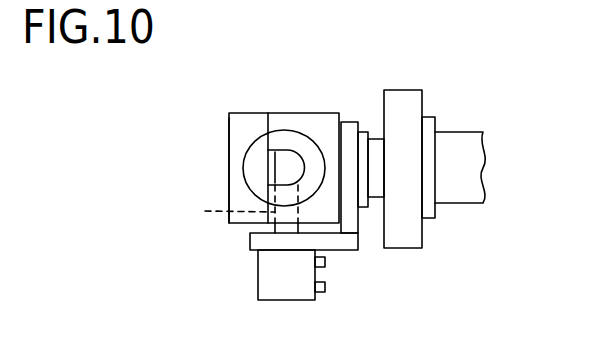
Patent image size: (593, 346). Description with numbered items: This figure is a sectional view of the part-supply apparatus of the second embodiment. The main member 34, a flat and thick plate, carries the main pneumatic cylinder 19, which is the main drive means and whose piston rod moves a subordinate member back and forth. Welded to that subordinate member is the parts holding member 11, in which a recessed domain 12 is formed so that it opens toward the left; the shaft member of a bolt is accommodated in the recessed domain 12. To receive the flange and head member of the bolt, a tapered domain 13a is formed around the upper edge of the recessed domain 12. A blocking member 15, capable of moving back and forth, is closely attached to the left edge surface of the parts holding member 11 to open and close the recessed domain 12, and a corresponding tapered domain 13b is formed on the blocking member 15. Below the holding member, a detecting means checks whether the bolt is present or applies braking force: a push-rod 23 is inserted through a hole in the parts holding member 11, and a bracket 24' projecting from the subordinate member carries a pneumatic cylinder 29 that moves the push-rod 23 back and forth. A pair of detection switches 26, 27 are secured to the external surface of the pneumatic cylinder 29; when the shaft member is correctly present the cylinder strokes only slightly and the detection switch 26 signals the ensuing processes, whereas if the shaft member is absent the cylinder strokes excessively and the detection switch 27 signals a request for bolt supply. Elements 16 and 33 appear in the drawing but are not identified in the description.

The parts holding member 11 is at (323, 113).
The recessed domain 12 is at (280, 160).
The tapered domain 13a is at (284, 131).
The tapered domain 13b is at (250, 182).
The blocking member 15 is at (228, 122).
The spacer plate 16 is at (350, 122).
The main pneumatic cylinder 19 is at (362, 132).
The push-rod 23 is at (236, 209).
The bracket 24' is at (270, 253).
The detection switch 26 is at (325, 285).
The detection switch 27 is at (325, 260).
The pneumatic cylinder 29 is at (273, 300).
The shaft 33 is at (475, 207).
The main member 34 is at (427, 238).